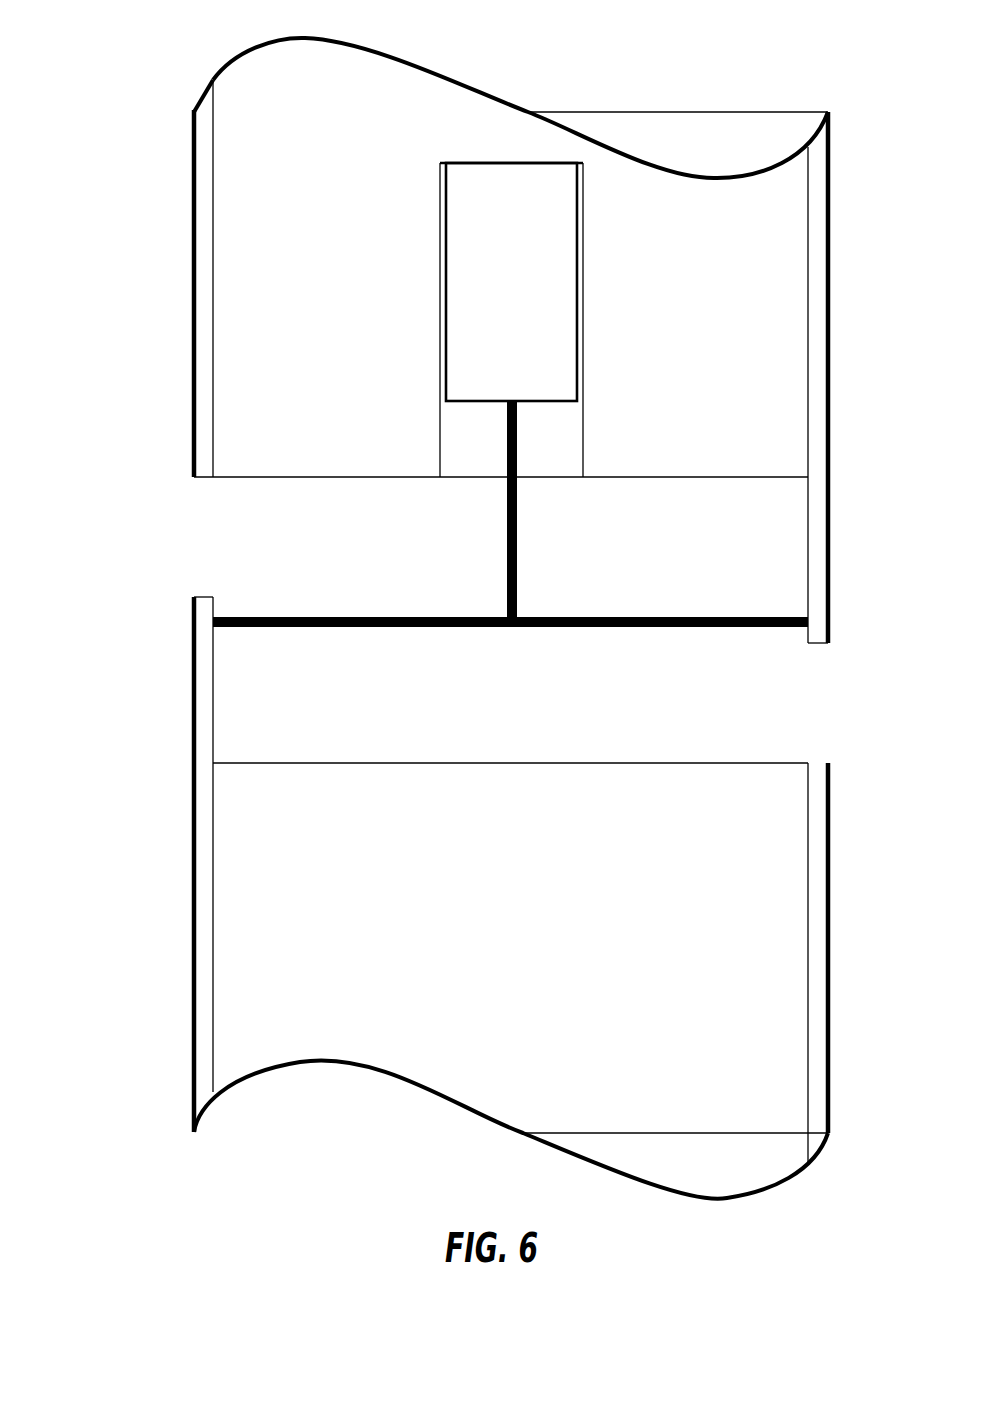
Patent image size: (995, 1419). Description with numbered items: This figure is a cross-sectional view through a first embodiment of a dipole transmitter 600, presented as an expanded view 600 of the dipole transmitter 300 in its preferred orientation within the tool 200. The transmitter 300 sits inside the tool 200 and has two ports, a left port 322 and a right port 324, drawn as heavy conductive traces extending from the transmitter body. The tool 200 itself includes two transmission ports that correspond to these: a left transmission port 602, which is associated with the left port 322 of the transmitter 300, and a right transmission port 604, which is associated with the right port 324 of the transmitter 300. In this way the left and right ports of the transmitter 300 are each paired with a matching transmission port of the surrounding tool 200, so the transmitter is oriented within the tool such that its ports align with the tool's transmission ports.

The dipole transmitter 600 is at (118, 102).
The tool 200 is at (318, 224).
The dipole transmitter 300 is at (609, 270).
The left port 322 is at (457, 507).
The right port 324 is at (543, 703).
The left transmission port 602 is at (192, 538).
The right transmission port 604 is at (830, 705).